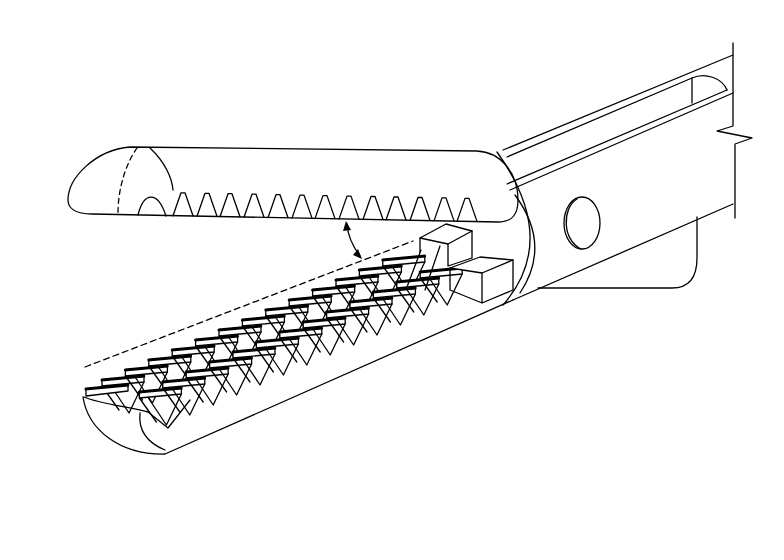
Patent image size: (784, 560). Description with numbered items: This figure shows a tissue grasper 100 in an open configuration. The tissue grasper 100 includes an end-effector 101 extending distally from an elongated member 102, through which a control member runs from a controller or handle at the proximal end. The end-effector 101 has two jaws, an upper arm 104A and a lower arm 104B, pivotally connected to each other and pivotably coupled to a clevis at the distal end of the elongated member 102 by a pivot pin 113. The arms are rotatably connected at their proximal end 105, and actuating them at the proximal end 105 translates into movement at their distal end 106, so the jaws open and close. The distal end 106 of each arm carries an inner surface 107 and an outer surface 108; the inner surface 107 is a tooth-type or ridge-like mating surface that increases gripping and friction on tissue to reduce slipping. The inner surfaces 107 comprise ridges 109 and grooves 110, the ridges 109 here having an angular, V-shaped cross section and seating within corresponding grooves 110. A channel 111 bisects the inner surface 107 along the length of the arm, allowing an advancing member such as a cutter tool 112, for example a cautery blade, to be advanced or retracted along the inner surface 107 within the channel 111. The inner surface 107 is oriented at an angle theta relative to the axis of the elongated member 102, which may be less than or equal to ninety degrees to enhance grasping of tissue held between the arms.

The tissue grasper 100 is at (207, 48).
The end-effector 101 is at (336, 123).
The elongated member 102 is at (716, 66).
The upper arm 104A is at (281, 158).
The lower arm 104B is at (343, 367).
The proximal end 105 is at (625, 113).
The distal end 106 is at (90, 165).
The inner surface 107 is at (186, 218).
The outer surface 108 is at (403, 352).
The ridges 109 is at (219, 403).
The grooves 110 is at (272, 388).
The channel 111 is at (366, 273).
The cutter tool 112 is at (478, 305).
The pivot pin 113 is at (585, 240).